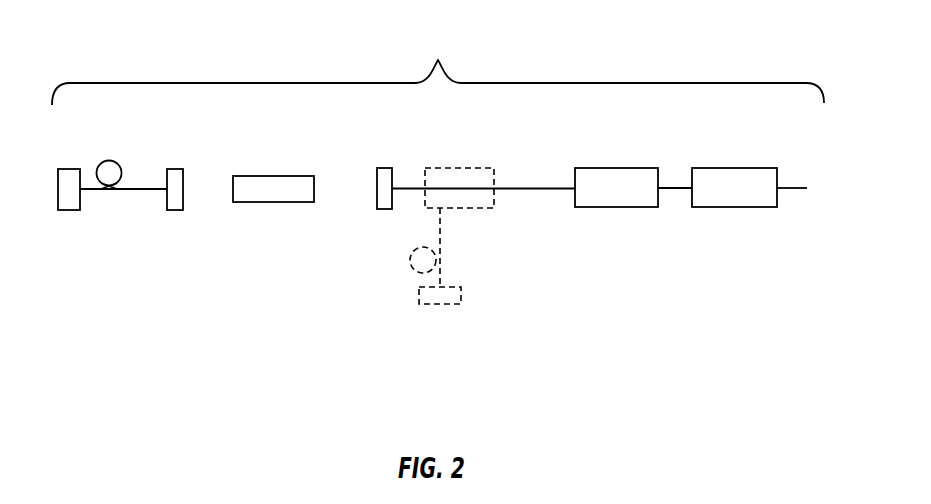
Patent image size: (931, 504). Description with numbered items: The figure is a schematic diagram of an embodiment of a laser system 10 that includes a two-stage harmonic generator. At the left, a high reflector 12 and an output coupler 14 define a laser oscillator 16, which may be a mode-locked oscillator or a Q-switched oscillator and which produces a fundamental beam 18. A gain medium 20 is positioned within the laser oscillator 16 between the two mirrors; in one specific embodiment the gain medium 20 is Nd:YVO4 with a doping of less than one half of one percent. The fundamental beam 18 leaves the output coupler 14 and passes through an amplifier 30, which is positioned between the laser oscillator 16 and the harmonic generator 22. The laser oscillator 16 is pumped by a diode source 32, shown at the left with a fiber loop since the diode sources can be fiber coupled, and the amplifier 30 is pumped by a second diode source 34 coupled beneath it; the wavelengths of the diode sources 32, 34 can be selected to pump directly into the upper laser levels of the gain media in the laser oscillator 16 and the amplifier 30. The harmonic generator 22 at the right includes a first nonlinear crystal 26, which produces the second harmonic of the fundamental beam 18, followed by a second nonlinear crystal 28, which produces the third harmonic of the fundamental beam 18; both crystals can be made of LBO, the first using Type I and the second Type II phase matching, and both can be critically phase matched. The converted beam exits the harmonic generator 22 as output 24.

The laser system 10 is at (438, 68).
The high reflector 12 is at (172, 168).
The output coupler 14 is at (382, 168).
The laser oscillator 16 is at (392, 278).
The fundamental beam 18 is at (515, 188).
The gain medium 20 is at (270, 202).
The harmonic generator 22 is at (798, 272).
The output beam 24 is at (795, 188).
The first nonlinear crystal 26 is at (612, 207).
The second nonlinear crystal 28 is at (733, 207).
The amplifier 30 is at (465, 208).
The diode source 32 is at (163, 220).
The diode source 34 is at (437, 304).